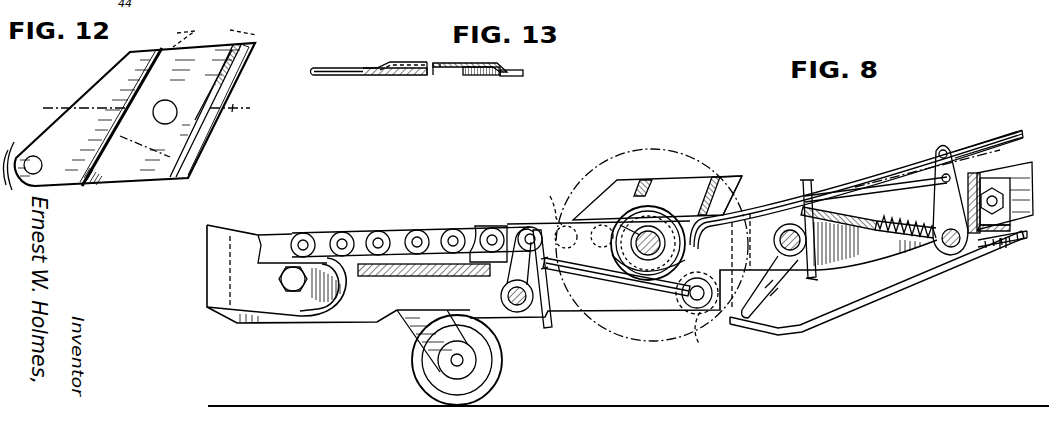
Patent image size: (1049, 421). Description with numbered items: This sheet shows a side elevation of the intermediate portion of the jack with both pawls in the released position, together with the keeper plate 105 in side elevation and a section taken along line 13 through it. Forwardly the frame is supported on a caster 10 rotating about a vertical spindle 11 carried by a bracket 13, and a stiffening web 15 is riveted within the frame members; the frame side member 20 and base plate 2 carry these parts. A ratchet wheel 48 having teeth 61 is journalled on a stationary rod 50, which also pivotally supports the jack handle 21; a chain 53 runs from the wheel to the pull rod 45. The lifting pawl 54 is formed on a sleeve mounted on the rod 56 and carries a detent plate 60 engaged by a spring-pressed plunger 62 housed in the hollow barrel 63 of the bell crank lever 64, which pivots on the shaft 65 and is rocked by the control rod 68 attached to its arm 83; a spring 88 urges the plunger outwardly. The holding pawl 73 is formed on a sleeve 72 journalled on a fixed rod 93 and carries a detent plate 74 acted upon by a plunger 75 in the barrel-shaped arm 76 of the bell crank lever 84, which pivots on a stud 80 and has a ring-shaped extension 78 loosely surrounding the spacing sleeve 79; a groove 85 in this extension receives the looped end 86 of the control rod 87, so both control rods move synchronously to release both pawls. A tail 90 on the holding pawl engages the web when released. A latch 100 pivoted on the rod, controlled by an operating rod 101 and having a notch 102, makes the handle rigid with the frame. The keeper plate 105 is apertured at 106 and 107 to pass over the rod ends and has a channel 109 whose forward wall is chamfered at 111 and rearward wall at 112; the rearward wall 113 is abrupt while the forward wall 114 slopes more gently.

In FIG. 8, the base plate 2 is at (262, 324).
In FIG. 8, the caster 10 is at (490, 370).
In FIG. 8, the vertical spindle 11 is at (737, 261).
In FIG. 12, the bracket 13 is at (149, 108).
In FIG. 8, the stiffening web 15 is at (382, 278).
In FIG. 8, the frame body 20 is at (214, 290).
In FIG. 12, the jack handle 21 is at (245, 34).
In FIG. 8, the jack handle 21 is at (1030, 184).
In FIG. 8, the pull rod 45 is at (280, 240).
In FIG. 8, the ratchet wheel 48 is at (690, 153).
In FIG. 8, the stationary rod 50 is at (648, 243).
In FIG. 8, the chain 53 is at (417, 230).
In FIG. 8, the lifting pawl 54 is at (758, 312).
In FIG. 8, the stationary rod 56 is at (802, 245).
In FIG. 8, the detent plate 60 is at (814, 279).
In FIG. 8, the teeth 61 is at (632, 272).
In FIG. 8, the spring-pressed plunger 62 is at (843, 205).
In FIG. 8, the hollow barrel 63 is at (882, 233).
In FIG. 8, the bell crank lever 64 is at (951, 255).
In FIG. 8, the shaft 65 is at (975, 252).
In FIG. 8, the control rod 68 is at (985, 144).
In FIG. 8, the sleeve 72 is at (501, 300).
In FIG. 8, the holding pawl 73 is at (524, 229).
In FIG. 8, the detent plate 74 is at (546, 329).
In FIG. 8, the spring-pressed plunger 75 is at (550, 272).
In FIG. 8, the barrel-shaped arm 76 is at (588, 272).
In FIG. 8, the ring-shaped extension 78 is at (678, 213).
In FIG. 8, the spacing sleeve 79 is at (640, 222).
In FIG. 8, the stud 80 is at (697, 315).
In FIG. 8, the arm 83 is at (956, 190).
In FIG. 8, the bell crank lever 84 is at (690, 306).
In FIG. 8, the groove 85 is at (703, 178).
In FIG. 8, the looped end 86 is at (662, 180).
In FIG. 8, the control rod 87 is at (772, 207).
In FIG. 8, the spring 88 is at (893, 262).
In FIG. 8, the tail 90 is at (478, 226).
In FIG. 8, the fixed rod 93 is at (517, 306).
In FIG. 8, the latch 100 is at (775, 280).
In FIG. 8, the operating rod 101 is at (890, 180).
In FIG. 8, the notch 102 is at (773, 294).
In FIG. 12, the keeper plate 105 is at (214, 130).
In FIG. 13, the keeper plate 105 is at (348, 76).
In FIG. 8, the keeper plate 105 is at (592, 205).
In FIG. 12, the aperture 106 is at (32, 158).
In FIG. 12, the aperture 107 is at (170, 103).
In FIG. 13, the aperture 107 is at (458, 72).
In FIG. 12, the channel 109 is at (148, 165).
In FIG. 13, the channel 109 is at (443, 74).
In FIG. 8, the channel 109 is at (730, 176).
In FIG. 12, the chamfer 111 is at (230, 88).
In FIG. 8, the chamfer 111 is at (745, 185).
In FIG. 12, the chamfer 112 is at (98, 166).
In FIG. 13, the chamfer 112 is at (388, 64).
In FIG. 13, the rearward wall 113 is at (429, 78).
In FIG. 12, the forward wall 114 is at (240, 50).
In FIG. 13, the forward wall 114 is at (505, 66).